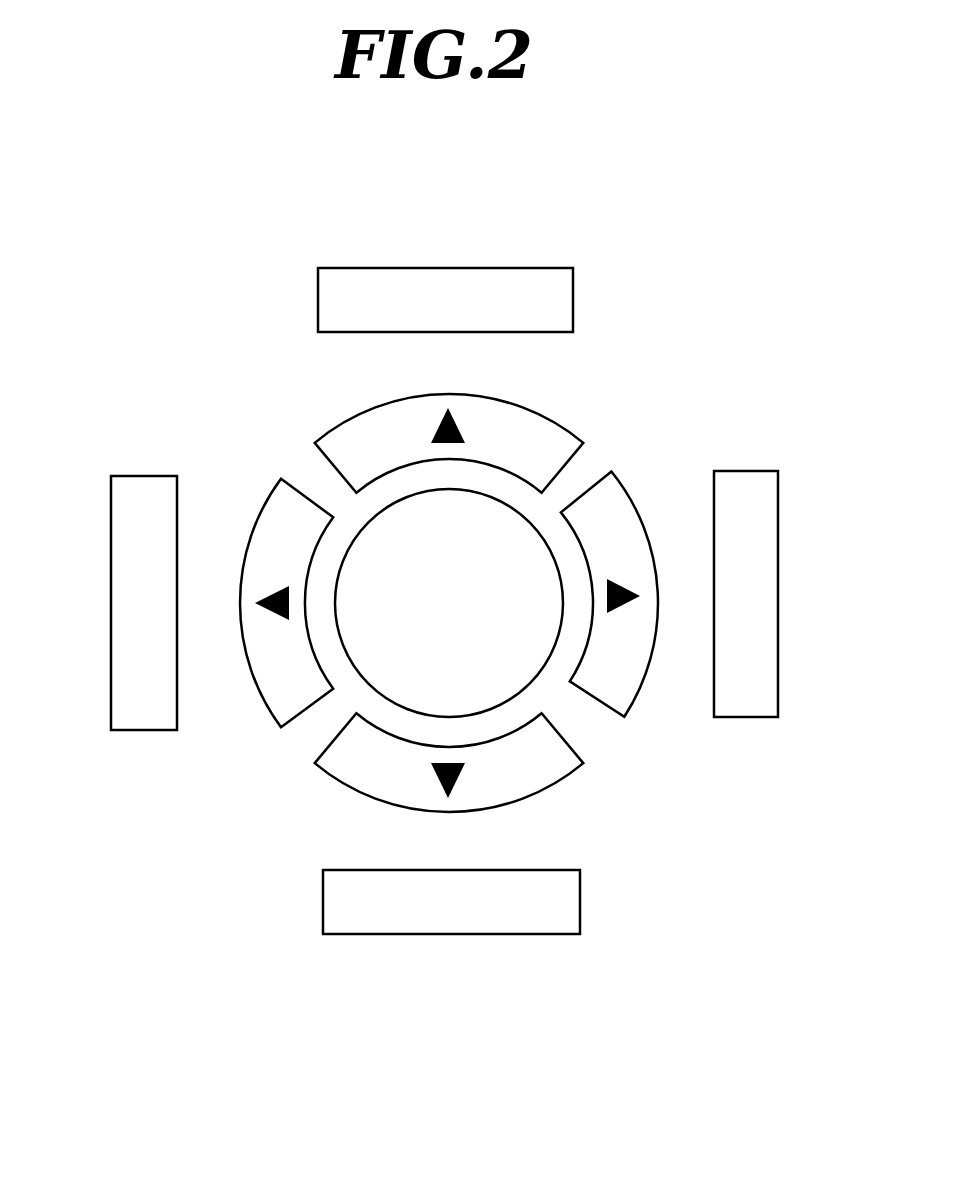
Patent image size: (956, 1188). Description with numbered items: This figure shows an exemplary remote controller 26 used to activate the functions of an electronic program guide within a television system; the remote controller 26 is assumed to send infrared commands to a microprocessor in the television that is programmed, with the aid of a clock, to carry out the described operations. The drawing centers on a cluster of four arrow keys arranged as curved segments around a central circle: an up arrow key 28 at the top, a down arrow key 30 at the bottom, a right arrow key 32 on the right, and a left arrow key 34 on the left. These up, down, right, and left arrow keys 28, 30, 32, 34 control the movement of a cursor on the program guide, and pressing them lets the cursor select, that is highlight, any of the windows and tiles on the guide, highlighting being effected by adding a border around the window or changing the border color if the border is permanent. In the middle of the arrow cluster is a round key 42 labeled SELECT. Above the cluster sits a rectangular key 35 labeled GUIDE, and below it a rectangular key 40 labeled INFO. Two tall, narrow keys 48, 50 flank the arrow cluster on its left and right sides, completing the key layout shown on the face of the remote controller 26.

The navigation key pad 26 is at (671, 264).
The up arrow key 28 is at (540, 432).
The down arrow key 30 is at (367, 765).
The right arrow key 32 is at (615, 523).
The left arrow key 34 is at (272, 527).
The guide key 35 is at (347, 278).
The info key 40 is at (542, 922).
The select key 42 is at (513, 662).
The left side key 48 is at (148, 715).
The right side key 50 is at (745, 704).